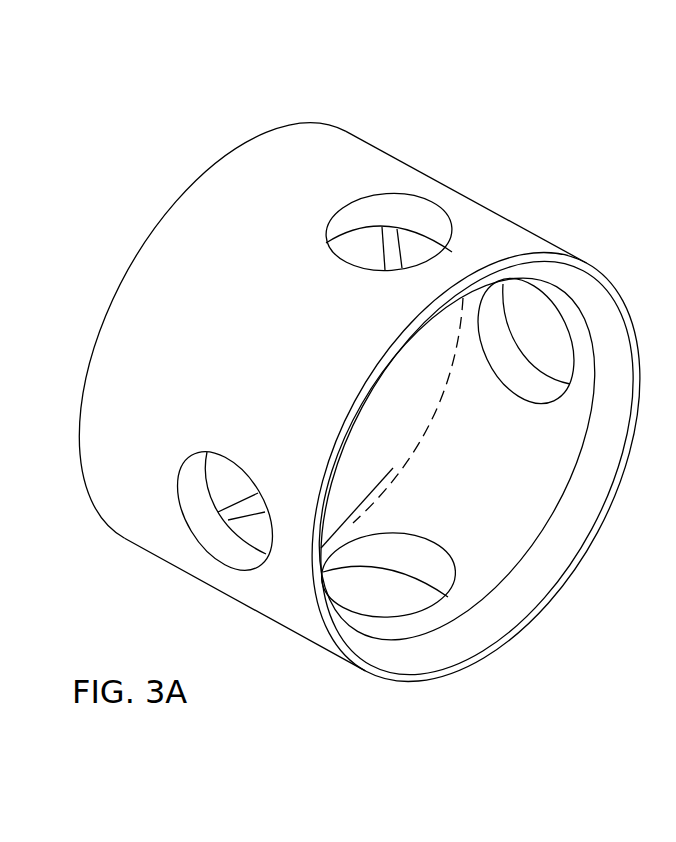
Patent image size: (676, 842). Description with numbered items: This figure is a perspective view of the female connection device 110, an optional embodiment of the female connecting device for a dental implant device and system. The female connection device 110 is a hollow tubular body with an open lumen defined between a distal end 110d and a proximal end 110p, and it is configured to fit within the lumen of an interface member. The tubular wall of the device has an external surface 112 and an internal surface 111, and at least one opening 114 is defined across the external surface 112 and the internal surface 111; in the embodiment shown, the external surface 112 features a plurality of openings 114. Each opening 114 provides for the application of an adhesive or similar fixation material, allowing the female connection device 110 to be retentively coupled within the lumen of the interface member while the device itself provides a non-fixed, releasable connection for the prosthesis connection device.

The female connection device 110 is at (600, 225).
The distal end 110d is at (140, 165).
The proximal end 110p is at (540, 637).
The internal surface 111 is at (482, 485).
The external surface 112 is at (342, 156).
The opening 114 is at (393, 211).